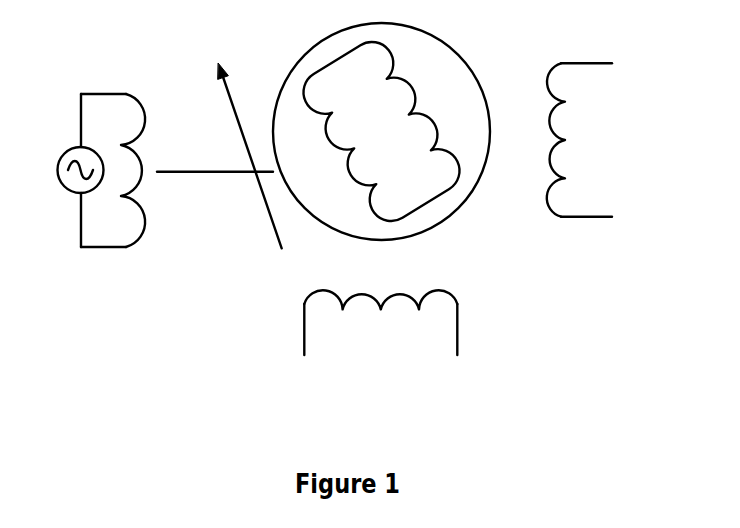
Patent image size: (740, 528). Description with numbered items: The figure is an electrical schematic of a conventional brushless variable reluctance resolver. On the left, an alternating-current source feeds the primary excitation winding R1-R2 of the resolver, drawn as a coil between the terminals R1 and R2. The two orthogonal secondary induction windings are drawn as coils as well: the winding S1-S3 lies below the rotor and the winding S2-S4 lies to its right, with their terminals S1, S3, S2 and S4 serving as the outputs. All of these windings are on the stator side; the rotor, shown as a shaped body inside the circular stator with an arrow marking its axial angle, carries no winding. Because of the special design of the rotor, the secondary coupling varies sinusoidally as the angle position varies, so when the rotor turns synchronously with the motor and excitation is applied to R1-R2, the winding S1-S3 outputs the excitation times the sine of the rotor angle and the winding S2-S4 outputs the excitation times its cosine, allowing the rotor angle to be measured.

The primary excitation winding terminal R1 is at (84, 99).
The primary excitation winding terminal R2 is at (84, 244).
The secondary induction winding terminal S1 is at (289, 340).
The secondary induction winding terminal S3 is at (443, 340).
The secondary induction winding terminal S2 is at (607, 68).
The secondary induction winding terminal S4 is at (607, 220).